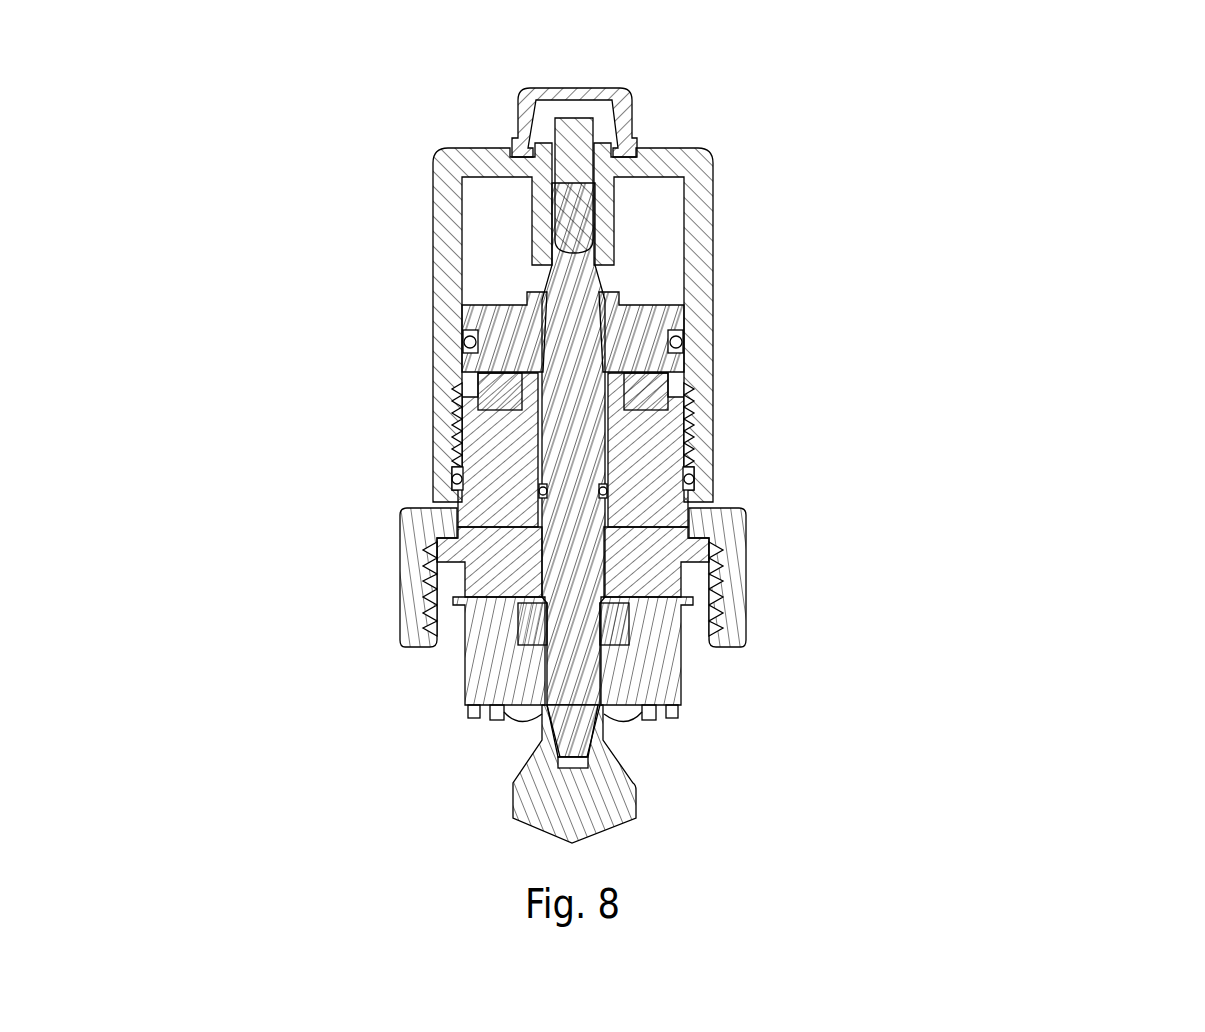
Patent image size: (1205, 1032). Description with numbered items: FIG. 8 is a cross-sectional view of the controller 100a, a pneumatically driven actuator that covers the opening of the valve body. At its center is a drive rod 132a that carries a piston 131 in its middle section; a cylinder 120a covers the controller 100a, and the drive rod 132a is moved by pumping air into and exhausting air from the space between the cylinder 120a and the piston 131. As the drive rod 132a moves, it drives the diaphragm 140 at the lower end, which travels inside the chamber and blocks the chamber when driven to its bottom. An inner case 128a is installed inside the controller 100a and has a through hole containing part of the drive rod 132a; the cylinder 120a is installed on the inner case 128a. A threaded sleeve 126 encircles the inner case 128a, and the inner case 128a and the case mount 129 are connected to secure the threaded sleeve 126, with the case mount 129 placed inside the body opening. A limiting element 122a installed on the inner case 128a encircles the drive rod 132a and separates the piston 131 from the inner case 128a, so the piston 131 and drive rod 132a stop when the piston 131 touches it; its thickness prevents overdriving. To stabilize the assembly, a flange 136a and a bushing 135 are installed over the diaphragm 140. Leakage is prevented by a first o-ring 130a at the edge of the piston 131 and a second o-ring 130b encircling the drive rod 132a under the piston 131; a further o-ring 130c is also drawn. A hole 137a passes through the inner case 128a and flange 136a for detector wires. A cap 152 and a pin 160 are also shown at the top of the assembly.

The controller 100a is at (1162, 160).
The cylinder 120a is at (702, 198).
The limiting element 122a is at (653, 395).
The threaded sleeve 126 is at (733, 507).
The inner case 128a is at (647, 468).
The case mount 129 is at (650, 560).
The first o-ring 130a is at (683, 340).
The second o-ring 130b is at (543, 490).
The sealing ring 130c is at (690, 482).
The piston 131 is at (490, 320).
The drive rod 132a is at (572, 450).
The bushing 135 is at (530, 633).
The flange 136a is at (518, 672).
The hole 137a is at (673, 695).
The diaphragm 140 is at (540, 750).
The cap 152 is at (630, 113).
The pin 160 is at (575, 128).